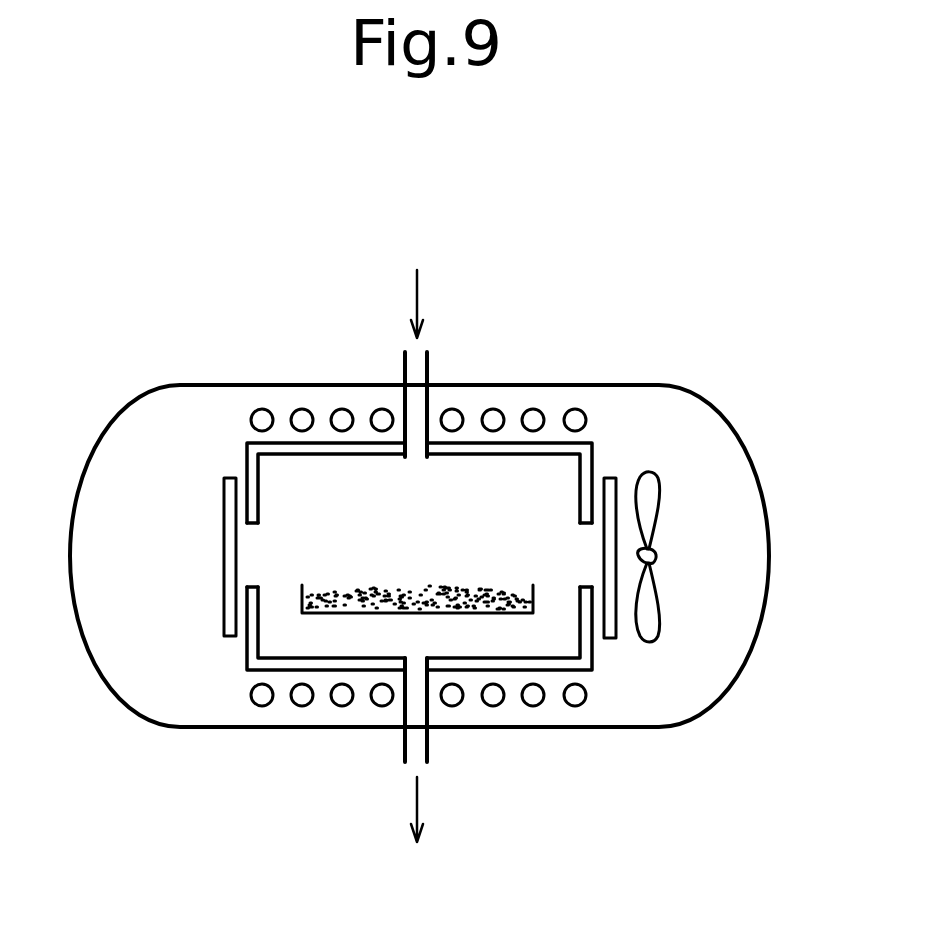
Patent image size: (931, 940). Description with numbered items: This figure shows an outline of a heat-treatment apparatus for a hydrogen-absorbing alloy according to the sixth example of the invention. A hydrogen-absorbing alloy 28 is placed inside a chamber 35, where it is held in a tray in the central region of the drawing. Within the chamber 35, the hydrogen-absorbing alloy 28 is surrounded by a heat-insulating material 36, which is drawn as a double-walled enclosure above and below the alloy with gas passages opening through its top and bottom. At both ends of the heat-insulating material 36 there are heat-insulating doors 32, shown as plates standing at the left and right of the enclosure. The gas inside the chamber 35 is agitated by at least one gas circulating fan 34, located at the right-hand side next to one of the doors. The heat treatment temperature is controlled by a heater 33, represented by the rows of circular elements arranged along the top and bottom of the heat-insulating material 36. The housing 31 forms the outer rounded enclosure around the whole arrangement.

The hydrogen-absorbing alloy 28 is at (340, 613).
The housing 31 is at (738, 492).
The heat-insulating door 32 is at (223, 615).
The heater 33 is at (577, 408).
The gas circulating fan 34 is at (648, 485).
The chamber 35 is at (513, 385).
The heat-insulating material 36 is at (592, 670).